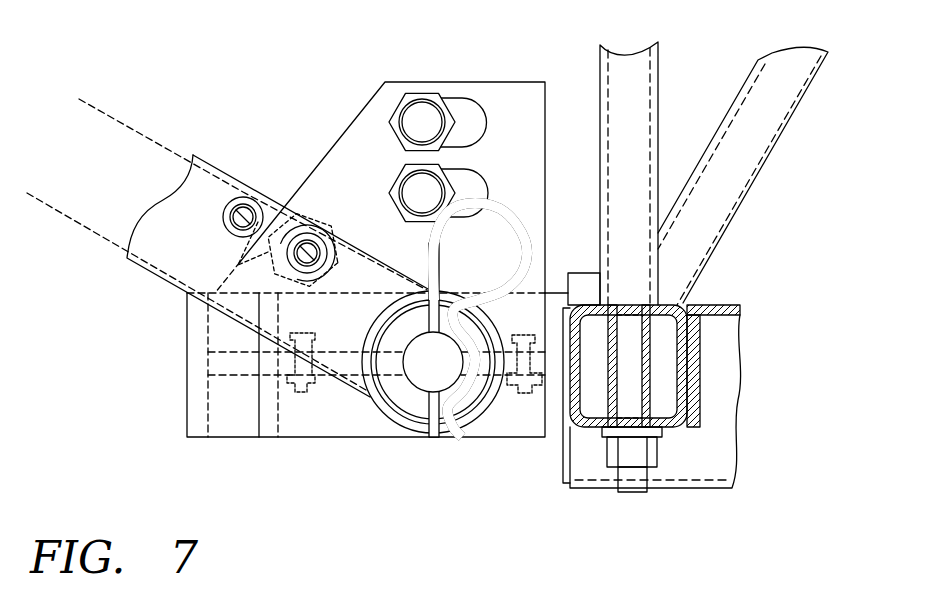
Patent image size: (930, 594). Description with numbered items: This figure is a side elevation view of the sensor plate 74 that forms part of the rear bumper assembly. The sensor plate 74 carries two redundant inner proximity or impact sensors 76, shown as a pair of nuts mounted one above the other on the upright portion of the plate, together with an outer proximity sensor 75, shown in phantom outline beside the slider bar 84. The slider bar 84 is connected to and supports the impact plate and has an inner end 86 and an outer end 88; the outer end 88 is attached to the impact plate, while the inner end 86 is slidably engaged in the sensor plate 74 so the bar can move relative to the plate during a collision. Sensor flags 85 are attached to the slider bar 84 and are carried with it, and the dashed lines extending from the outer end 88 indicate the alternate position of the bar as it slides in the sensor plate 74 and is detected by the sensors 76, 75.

The sensor plate 74 is at (515, 117).
The outer proximity sensor 75 is at (279, 214).
The inner proximity sensors 76 is at (415, 192).
The slider bar 84 is at (167, 247).
The sensor flags 85 is at (240, 197).
The inner end 86 is at (340, 330).
The outer end 88 is at (102, 142).